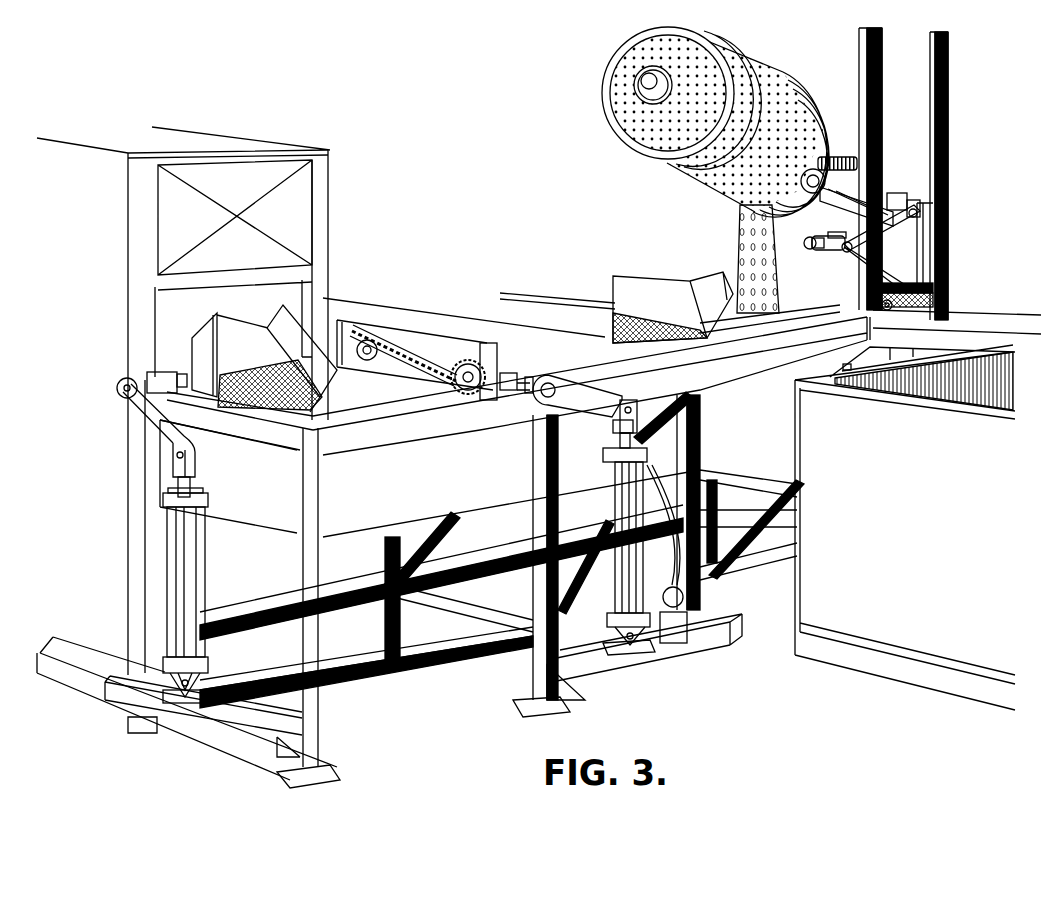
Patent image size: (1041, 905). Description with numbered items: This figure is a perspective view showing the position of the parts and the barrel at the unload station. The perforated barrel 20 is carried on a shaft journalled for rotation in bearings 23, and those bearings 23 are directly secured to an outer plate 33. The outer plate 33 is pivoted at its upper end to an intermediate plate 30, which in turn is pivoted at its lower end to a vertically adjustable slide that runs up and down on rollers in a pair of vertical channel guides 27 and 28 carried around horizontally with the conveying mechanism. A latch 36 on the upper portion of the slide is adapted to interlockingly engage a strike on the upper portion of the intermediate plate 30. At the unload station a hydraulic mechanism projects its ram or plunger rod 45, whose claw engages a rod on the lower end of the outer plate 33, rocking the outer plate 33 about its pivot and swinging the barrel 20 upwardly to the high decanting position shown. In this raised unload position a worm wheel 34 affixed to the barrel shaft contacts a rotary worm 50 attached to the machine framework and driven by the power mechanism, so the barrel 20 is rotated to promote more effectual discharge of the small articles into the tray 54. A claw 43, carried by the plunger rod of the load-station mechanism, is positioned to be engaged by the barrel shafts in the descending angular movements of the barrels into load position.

The perforated barrel 20 is at (645, 133).
The bearings 23 is at (856, 206).
The channel guide 27 is at (860, 62).
The channel guide 28 is at (944, 60).
The intermediate plate 30 is at (905, 245).
The outer plate 33 is at (843, 228).
The worm wheel 34 is at (808, 195).
The latch 36 is at (900, 193).
The claw 43 is at (827, 250).
The plunger rod 45 is at (850, 252).
The worm 50 is at (848, 157).
The tray 54 is at (718, 300).